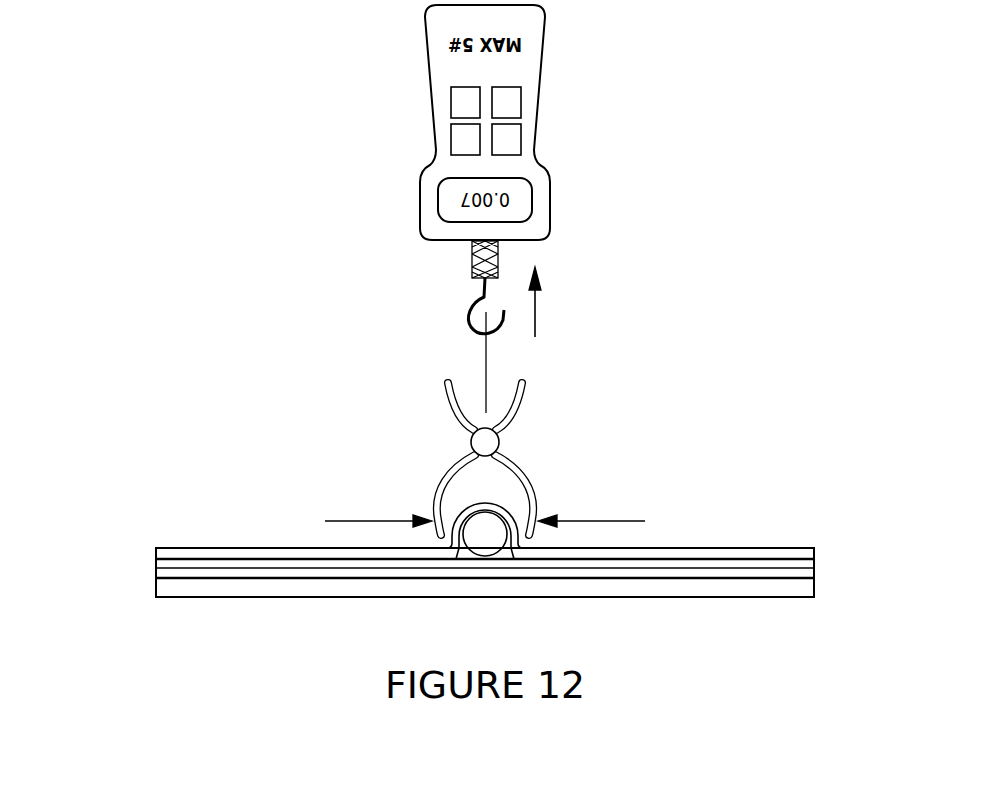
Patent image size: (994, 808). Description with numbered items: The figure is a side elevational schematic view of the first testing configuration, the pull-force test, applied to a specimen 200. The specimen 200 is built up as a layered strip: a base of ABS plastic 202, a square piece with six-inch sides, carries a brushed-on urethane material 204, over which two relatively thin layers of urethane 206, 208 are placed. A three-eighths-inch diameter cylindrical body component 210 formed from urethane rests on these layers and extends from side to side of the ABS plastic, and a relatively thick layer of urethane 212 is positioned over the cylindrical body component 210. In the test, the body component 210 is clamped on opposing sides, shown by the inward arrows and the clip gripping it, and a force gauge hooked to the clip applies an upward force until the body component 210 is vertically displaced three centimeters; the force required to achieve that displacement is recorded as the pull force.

The specimen 200 is at (454, 568).
The base of ABS plastic 202 is at (683, 590).
The urethane material 204 is at (765, 580).
The relatively thin layer of urethane 206 is at (815, 573).
The relatively thin layer of urethane 208 is at (157, 560).
The cylindrical body component 210 is at (483, 543).
The relatively thick layer of urethane 212 is at (735, 548).